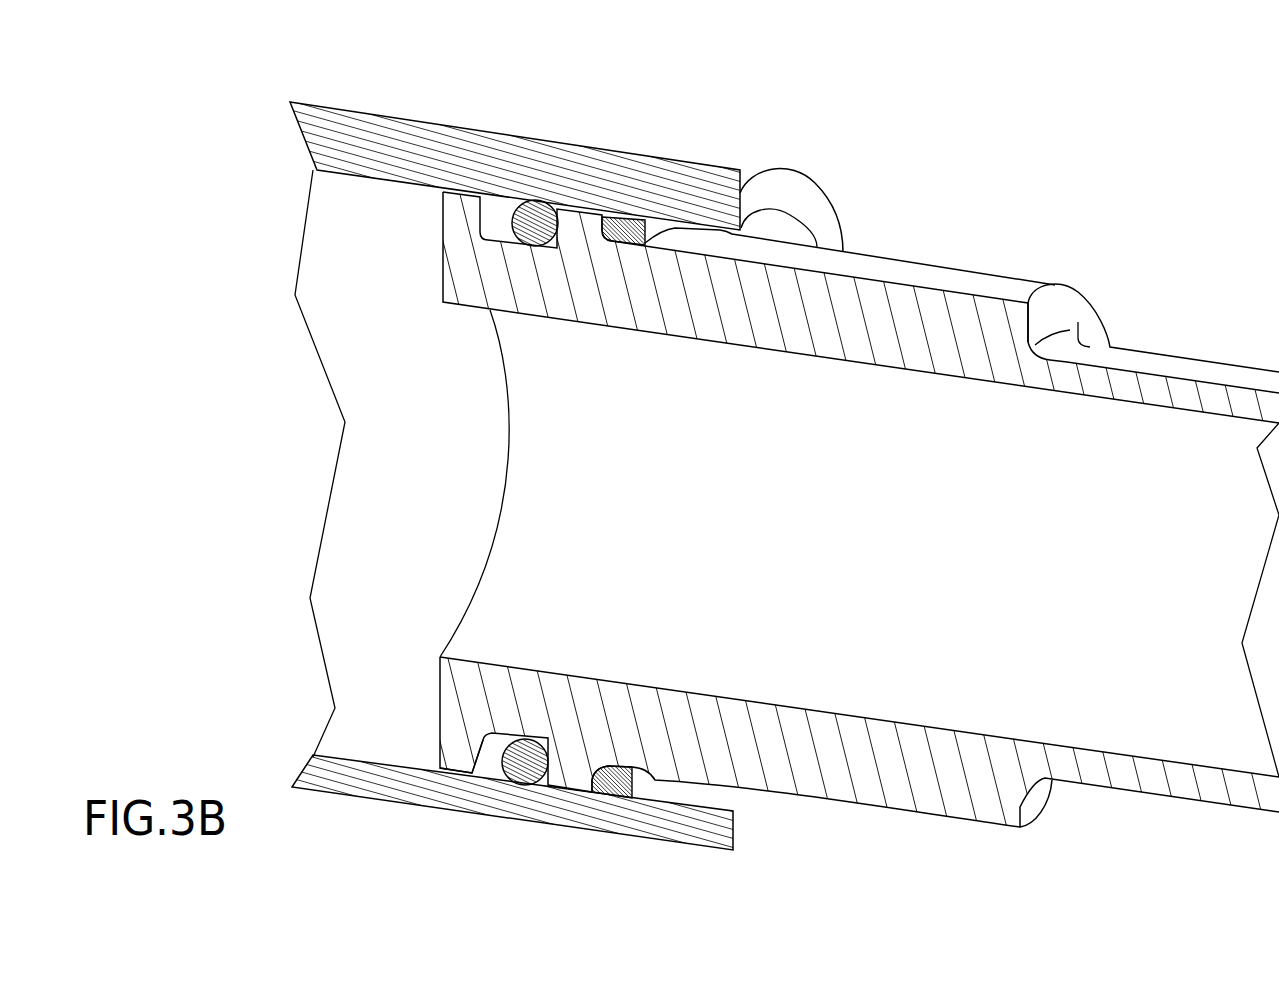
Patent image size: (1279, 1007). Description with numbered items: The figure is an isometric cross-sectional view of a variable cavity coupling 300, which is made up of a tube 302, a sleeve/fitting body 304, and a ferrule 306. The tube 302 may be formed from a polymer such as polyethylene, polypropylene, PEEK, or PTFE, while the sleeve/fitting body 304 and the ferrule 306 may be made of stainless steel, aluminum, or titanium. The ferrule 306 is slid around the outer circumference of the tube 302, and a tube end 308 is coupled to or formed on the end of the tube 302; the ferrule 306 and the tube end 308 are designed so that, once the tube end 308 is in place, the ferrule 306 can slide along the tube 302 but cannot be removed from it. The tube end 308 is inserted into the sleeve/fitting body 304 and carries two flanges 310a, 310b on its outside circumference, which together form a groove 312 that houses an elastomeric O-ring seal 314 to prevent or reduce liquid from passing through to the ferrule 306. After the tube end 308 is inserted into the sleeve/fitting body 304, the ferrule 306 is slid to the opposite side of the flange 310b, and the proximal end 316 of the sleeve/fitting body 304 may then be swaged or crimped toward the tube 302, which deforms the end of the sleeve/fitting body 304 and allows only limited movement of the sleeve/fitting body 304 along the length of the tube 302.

The variable cavity coupling 300 is at (171, 139).
The tube 302 is at (1004, 275).
The sleeve/fitting body 304 is at (364, 118).
The ferrule 306 is at (624, 206).
The tube end 308 is at (428, 265).
The flange 310a is at (455, 771).
The flange 310b is at (571, 790).
The groove 312 is at (487, 784).
The elastomeric O-ring seal 314 is at (534, 188).
The proximal end 316 is at (729, 178).